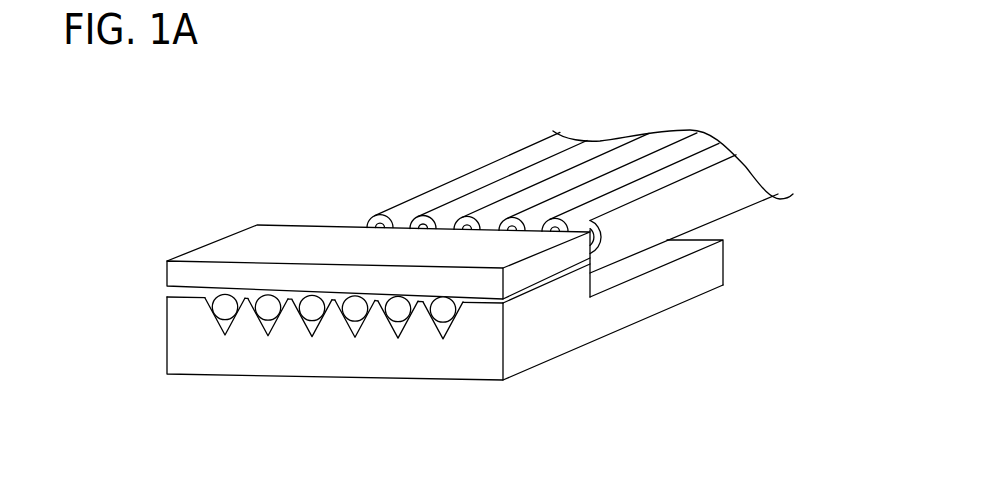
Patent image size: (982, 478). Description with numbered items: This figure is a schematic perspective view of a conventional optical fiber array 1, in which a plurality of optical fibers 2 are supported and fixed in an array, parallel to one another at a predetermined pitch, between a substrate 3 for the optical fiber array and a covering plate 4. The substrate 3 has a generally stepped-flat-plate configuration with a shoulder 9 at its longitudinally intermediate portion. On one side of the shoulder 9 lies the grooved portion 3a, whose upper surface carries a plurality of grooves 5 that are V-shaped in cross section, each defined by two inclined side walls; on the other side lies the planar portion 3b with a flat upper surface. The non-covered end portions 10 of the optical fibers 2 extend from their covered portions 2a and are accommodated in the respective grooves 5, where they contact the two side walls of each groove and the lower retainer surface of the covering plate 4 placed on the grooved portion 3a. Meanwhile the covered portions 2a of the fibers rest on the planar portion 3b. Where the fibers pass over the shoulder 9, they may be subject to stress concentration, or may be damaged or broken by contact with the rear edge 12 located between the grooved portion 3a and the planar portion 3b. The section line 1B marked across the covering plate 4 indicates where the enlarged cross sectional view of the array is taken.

The optical fiber array 1 is at (304, 191).
The optical fibers 2 is at (495, 152).
The covered portions 2a is at (555, 172).
The substrate 3 is at (445, 343).
The grooved portion 3a is at (540, 308).
The planar portion 3b is at (665, 290).
The covering plate 4 is at (242, 252).
The grooves 5 is at (227, 333).
The shoulder 9 is at (590, 282).
The non-covered end portions 10 is at (224, 307).
The rear edge 12 is at (618, 260).
The line 1B- 1B is at (330, 244).